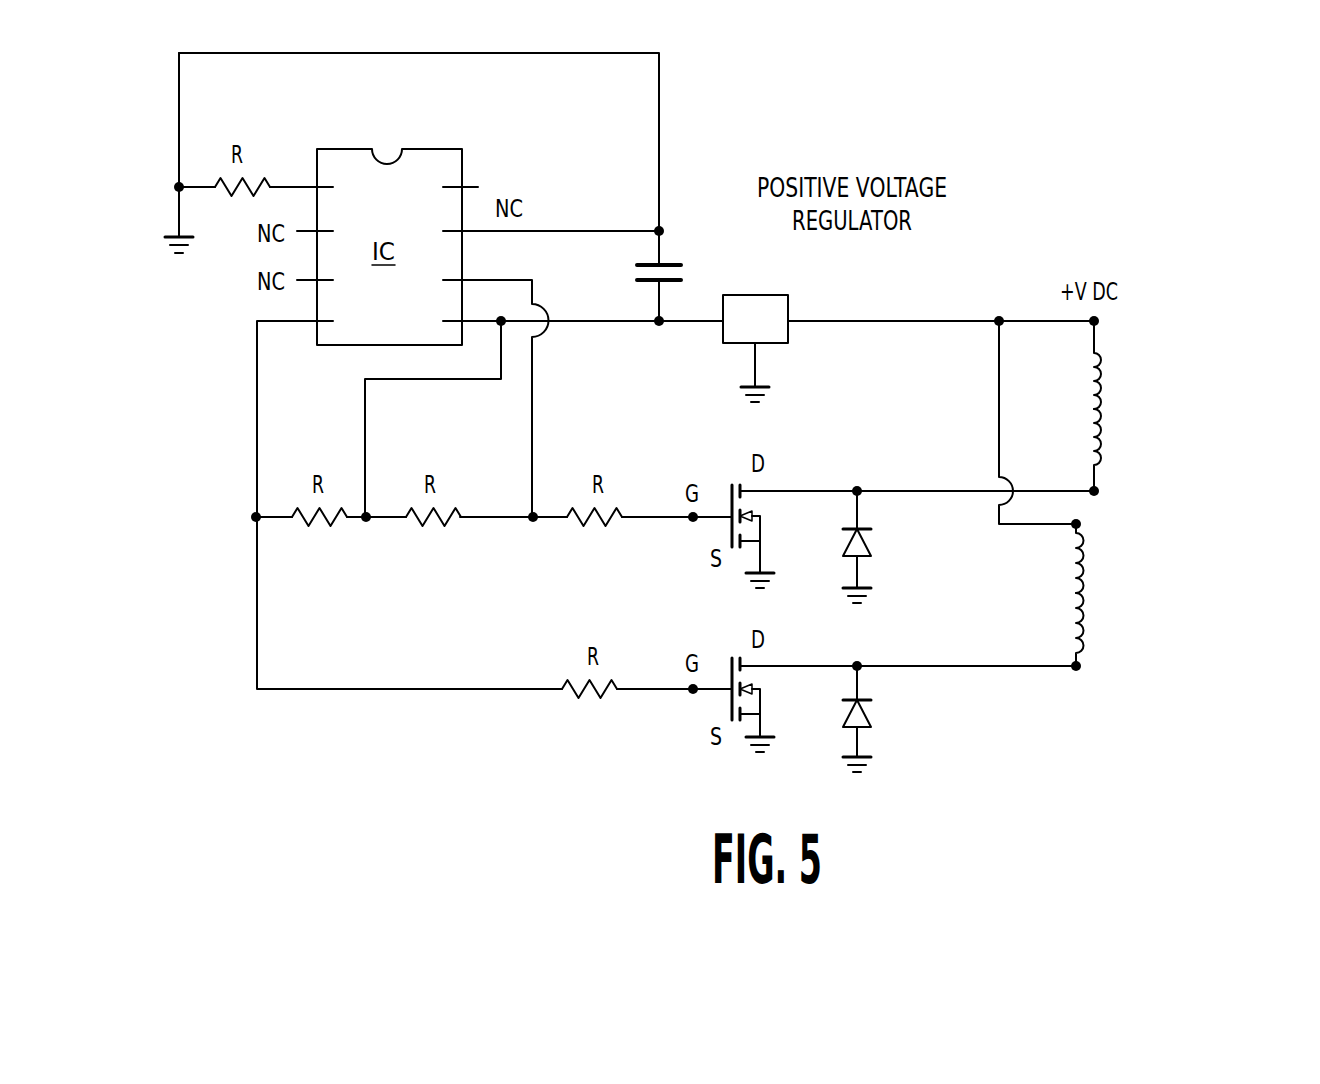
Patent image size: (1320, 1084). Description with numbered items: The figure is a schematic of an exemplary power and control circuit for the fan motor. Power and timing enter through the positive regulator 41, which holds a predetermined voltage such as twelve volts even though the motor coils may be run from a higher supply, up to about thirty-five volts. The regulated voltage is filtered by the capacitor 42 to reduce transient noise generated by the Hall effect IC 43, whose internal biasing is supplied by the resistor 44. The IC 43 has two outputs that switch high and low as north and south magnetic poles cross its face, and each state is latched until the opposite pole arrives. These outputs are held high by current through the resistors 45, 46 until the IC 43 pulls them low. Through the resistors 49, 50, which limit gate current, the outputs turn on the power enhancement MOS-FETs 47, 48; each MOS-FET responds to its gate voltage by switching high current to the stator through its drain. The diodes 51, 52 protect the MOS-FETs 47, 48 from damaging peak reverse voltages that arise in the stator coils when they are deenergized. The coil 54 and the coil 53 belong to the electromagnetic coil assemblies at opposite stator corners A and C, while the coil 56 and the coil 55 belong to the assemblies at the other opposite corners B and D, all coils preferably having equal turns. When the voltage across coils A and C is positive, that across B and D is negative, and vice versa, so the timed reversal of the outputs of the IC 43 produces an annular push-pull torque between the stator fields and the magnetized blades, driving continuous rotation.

The positive regulator 41 is at (788, 297).
The capacitor 42 is at (683, 264).
The Hall effect IC 43 is at (432, 160).
The resistor 44 is at (266, 177).
The resistor 45 is at (322, 526).
The resistor 46 is at (434, 526).
The power enhancement MOS-FET 47 is at (730, 493).
The power enhancement MOS-FET 48 is at (730, 668).
The resistor 49 is at (598, 527).
The resistor 50 is at (596, 700).
The diode 51 is at (873, 549).
The diode 52 is at (875, 718).
The coil 53 is at (1098, 457).
The coil 54 is at (1098, 388).
The coil 55 is at (1080, 641).
The coil 56 is at (1080, 564).